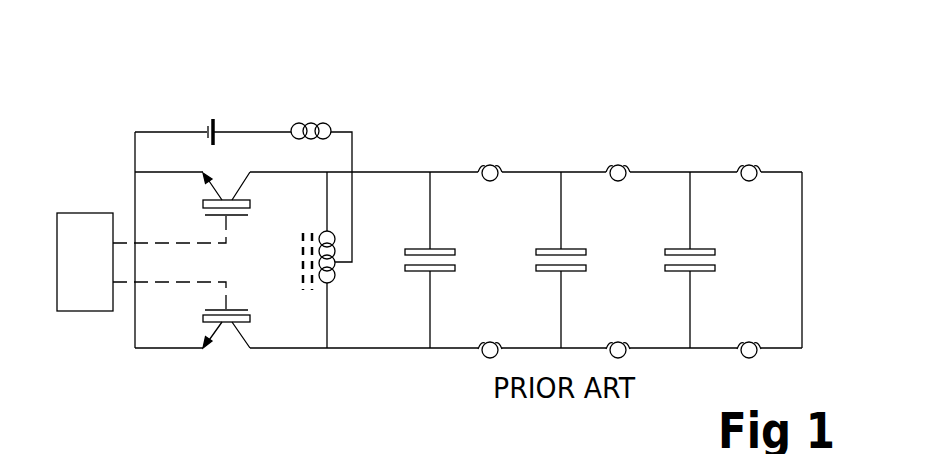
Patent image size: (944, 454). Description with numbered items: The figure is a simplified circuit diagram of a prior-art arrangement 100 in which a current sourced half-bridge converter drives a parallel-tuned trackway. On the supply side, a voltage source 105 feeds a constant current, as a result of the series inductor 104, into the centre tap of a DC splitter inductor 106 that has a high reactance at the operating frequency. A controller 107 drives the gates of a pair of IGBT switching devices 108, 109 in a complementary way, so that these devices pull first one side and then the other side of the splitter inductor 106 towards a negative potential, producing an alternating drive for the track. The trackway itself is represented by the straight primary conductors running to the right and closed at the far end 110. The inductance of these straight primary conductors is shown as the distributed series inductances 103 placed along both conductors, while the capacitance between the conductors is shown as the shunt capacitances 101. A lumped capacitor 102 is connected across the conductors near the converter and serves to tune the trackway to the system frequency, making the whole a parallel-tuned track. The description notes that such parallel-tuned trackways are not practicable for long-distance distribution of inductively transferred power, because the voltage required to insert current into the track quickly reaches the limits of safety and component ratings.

The prior-art converter circuit 100 is at (687, 124).
The capacitance between conductors 101 is at (578, 250).
The lumped capacitor 102 is at (413, 271).
The inductance of primary conductors 103 is at (490, 165).
The inductor 104 is at (320, 123).
The voltage source 105 is at (208, 118).
The DC splitter inductor 106 is at (303, 290).
The controller 107 is at (78, 216).
The switching device 108 is at (200, 196).
The switching device 109 is at (203, 320).
The output terminal 110 is at (803, 237).